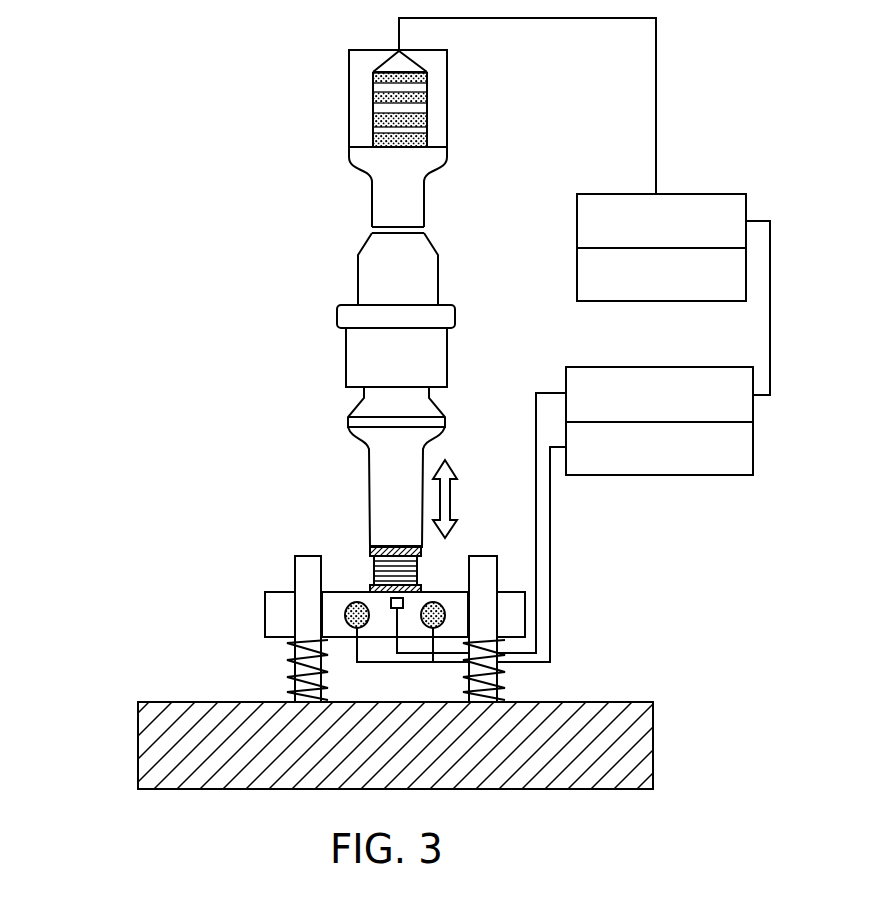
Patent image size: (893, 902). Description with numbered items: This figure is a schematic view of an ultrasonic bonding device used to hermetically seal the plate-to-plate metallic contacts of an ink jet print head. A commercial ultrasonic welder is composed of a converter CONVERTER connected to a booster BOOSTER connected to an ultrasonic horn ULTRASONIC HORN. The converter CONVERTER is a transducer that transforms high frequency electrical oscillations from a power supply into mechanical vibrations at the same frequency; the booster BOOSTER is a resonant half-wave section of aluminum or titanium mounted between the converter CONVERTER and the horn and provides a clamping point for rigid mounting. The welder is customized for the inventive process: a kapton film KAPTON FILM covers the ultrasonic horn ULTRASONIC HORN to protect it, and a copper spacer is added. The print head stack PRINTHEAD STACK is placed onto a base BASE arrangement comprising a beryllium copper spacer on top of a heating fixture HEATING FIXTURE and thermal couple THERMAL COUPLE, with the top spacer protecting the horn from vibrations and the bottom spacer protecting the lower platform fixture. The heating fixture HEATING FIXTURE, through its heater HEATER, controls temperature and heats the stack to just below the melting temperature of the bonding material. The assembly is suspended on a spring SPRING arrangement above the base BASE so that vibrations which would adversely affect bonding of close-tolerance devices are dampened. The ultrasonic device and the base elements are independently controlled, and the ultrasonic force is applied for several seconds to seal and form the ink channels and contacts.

The converter CONVERTER is at (373, 109).
The booster BOOSTER is at (337, 314).
The ultrasonic horn ULTRASONIC HORN is at (348, 428).
The kapton film KAPTON FILM is at (372, 546).
The print head stack PRINTHEAD STACK is at (374, 570).
The heating fixture HEATING FIXTURE is at (372, 594).
The thermal couple THERMAL COUPLE is at (391, 604).
The heater HEATER is at (345, 615).
The spring SPRING is at (290, 664).
The base BASE is at (138, 733).